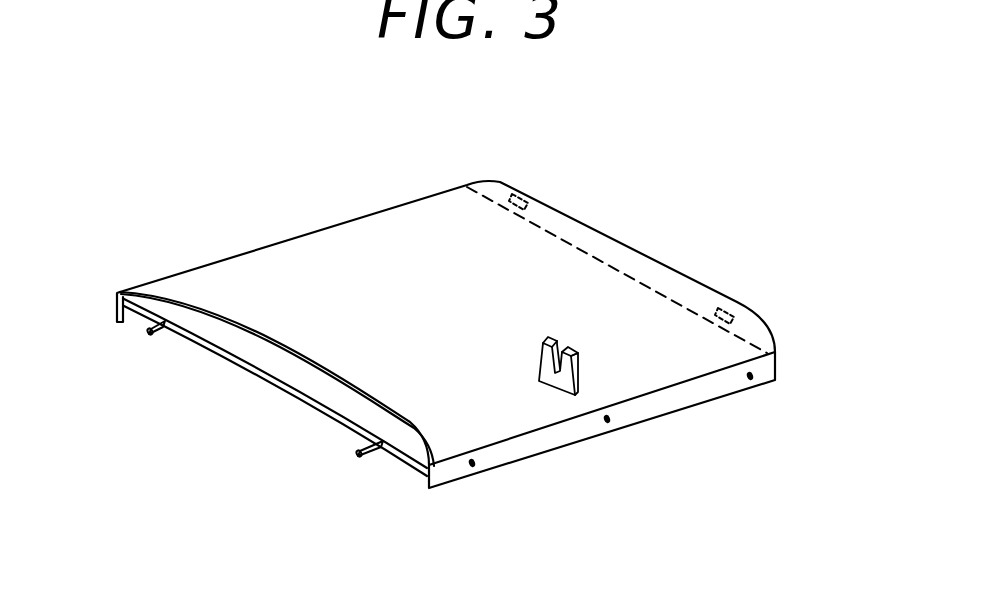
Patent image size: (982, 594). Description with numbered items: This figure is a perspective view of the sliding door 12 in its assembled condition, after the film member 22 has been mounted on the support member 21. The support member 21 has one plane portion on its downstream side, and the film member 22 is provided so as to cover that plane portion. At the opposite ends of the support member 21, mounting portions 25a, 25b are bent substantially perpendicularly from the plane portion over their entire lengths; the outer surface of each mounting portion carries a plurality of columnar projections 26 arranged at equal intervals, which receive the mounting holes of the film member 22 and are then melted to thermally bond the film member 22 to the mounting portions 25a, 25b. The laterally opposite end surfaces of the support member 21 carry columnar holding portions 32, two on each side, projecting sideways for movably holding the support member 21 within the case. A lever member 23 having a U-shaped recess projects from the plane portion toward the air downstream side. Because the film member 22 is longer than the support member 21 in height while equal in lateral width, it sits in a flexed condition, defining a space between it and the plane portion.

The sliding door 12 is at (391, 186).
The support member 21 is at (270, 357).
The film member 22 is at (580, 283).
The lever member 23 is at (552, 392).
The mounting portion 25a is at (428, 486).
The mounting portion 25b is at (117, 308).
The columnar projections 26 is at (473, 467).
The columnar holding portions 32 is at (158, 331).